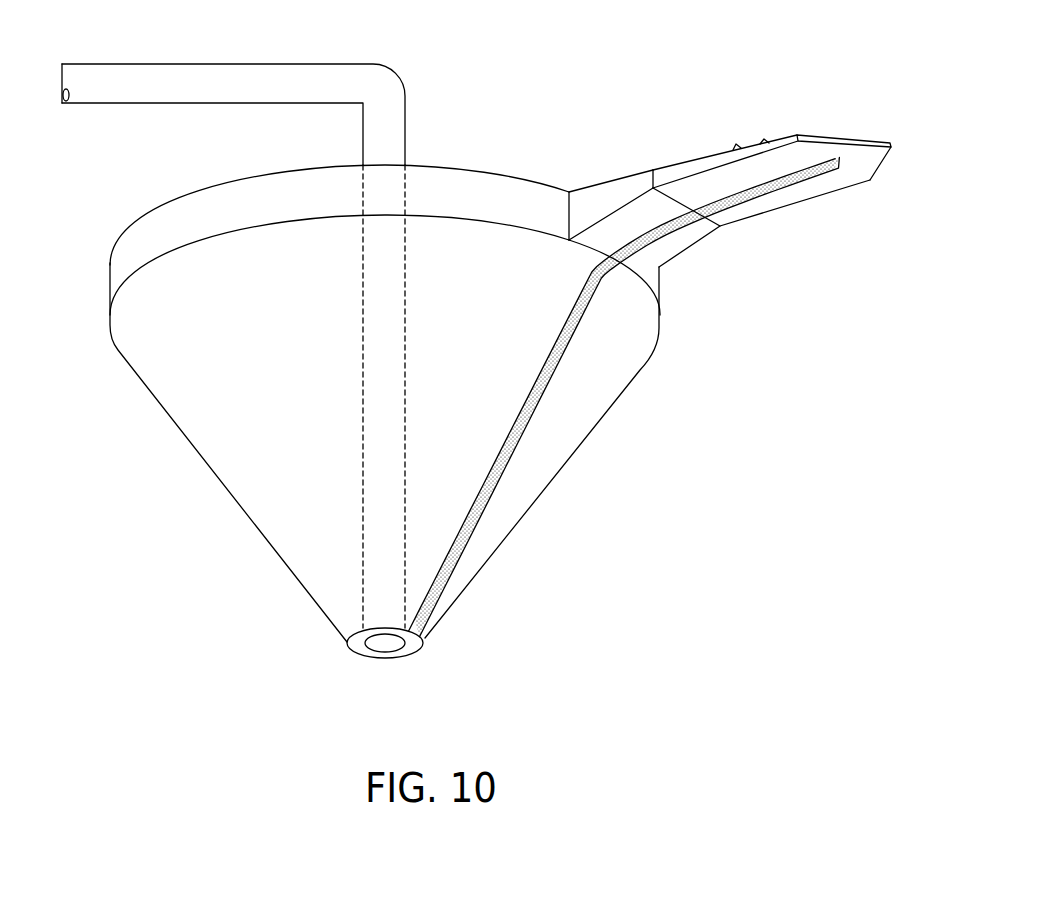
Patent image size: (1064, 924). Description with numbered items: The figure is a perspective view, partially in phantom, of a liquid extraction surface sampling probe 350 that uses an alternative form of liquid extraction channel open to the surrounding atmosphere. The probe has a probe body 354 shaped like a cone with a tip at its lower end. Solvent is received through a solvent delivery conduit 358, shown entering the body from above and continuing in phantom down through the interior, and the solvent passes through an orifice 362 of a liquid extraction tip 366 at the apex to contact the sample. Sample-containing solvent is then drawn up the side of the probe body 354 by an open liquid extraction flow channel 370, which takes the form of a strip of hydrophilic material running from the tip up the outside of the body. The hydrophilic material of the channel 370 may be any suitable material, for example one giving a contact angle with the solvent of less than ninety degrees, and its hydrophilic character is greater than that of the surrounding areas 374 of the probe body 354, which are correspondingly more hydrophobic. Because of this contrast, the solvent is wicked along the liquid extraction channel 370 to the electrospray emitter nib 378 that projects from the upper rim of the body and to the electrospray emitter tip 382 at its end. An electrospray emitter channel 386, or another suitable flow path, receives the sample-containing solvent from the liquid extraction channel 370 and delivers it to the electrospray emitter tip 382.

The liquid extraction surface sampling probe 350 is at (533, 110).
The probe body 354 is at (626, 380).
The solvent delivery conduit 358 is at (226, 64).
The orifice 362 is at (378, 644).
The liquid extraction tip 366 is at (417, 644).
The liquid extraction flow channel 370 is at (498, 483).
The surrounding areas 374 is at (497, 423).
The electrospray emitter nib 378 is at (808, 198).
The electrospray emitter tip 382 is at (890, 144).
The electrospray emitter channel 386 is at (872, 160).